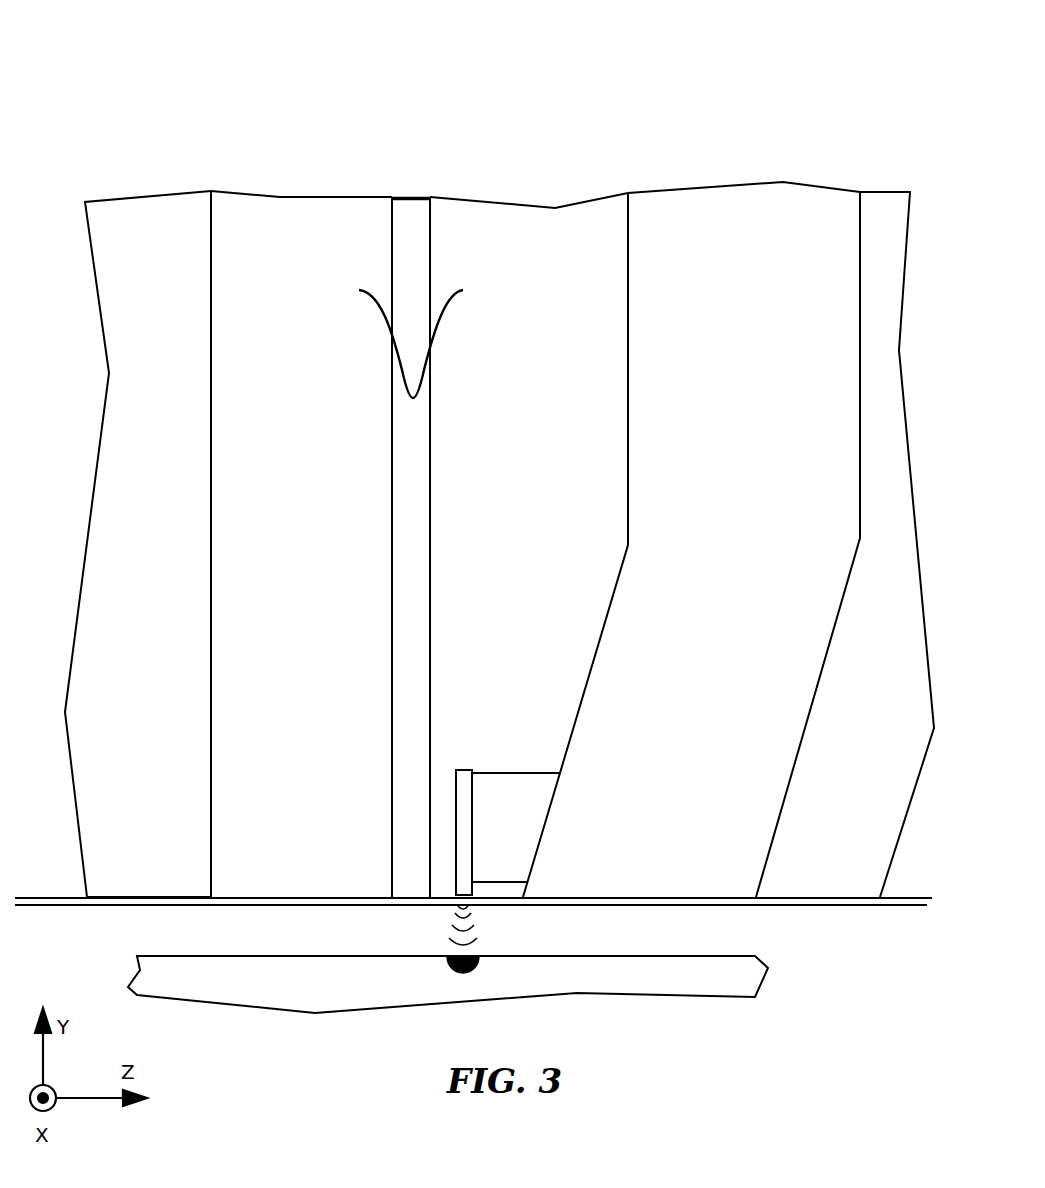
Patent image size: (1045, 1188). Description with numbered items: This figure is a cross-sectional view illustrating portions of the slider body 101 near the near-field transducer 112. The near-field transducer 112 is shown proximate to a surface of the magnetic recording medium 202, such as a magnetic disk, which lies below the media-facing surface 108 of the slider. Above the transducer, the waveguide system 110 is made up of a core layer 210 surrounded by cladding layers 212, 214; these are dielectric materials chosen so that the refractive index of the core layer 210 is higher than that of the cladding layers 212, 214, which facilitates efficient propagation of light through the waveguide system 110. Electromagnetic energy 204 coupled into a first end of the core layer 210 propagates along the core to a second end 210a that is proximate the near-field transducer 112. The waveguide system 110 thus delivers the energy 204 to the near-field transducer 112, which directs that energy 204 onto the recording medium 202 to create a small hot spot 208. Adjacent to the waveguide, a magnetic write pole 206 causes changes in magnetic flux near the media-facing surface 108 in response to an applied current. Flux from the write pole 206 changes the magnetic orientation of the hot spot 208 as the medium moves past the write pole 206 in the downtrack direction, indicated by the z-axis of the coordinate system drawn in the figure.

The slider body 101 is at (786, 106).
The media-facing surface 108 is at (815, 907).
The waveguide system 110 is at (620, 152).
The near-field transducer 112 is at (460, 903).
The magnetic recording medium 202 is at (200, 982).
The electromagnetic energy 204 is at (378, 306).
The magnetic write pole 206 is at (760, 183).
The hot spot 208 is at (463, 968).
The core layer 210 is at (412, 197).
The second end 210a is at (395, 836).
The cladding layer 212 is at (466, 216).
The cladding layer 214 is at (237, 191).